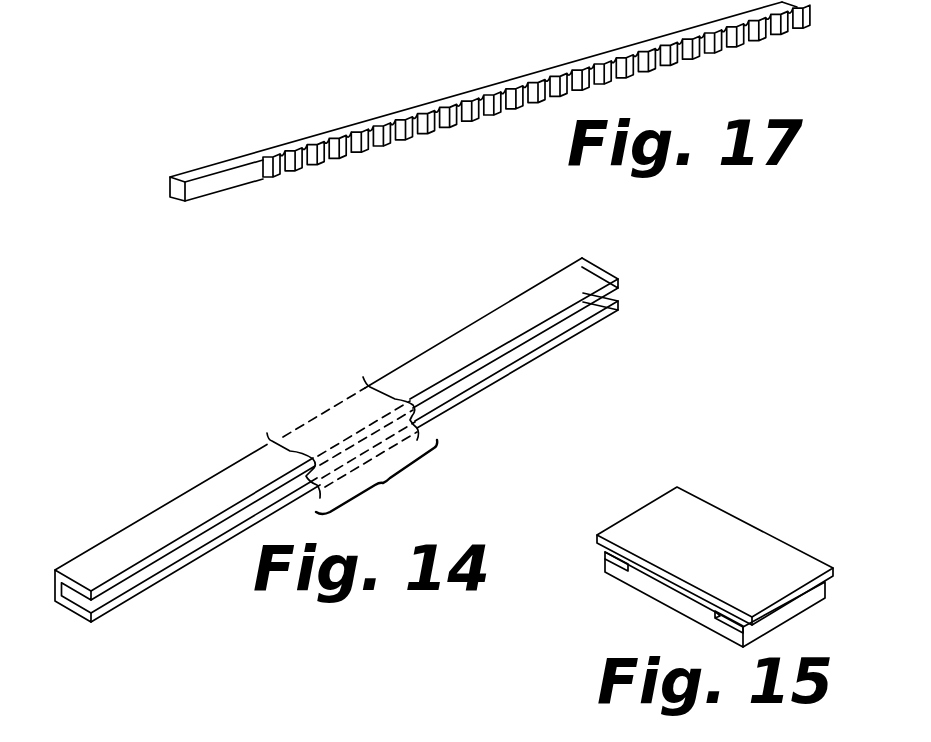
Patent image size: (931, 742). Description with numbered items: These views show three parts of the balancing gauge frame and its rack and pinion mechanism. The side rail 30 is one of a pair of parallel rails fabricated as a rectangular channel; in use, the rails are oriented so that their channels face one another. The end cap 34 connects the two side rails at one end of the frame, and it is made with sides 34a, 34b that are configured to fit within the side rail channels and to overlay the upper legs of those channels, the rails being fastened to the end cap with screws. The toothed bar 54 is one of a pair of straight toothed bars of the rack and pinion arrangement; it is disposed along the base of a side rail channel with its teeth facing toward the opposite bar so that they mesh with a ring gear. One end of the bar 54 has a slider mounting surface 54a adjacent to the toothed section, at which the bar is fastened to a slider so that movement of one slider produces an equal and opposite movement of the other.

In FIG. 14, the side rail 30 is at (200, 503).
In FIG. 15, the end cap 34 is at (737, 542).
In FIG. 15, the end cap side 34a is at (605, 557).
In FIG. 15, the end cap side 34b is at (783, 617).
In FIG. 17, the toothed bar 54 is at (400, 110).
In FIG. 17, the slider mounting surface 54a is at (193, 176).